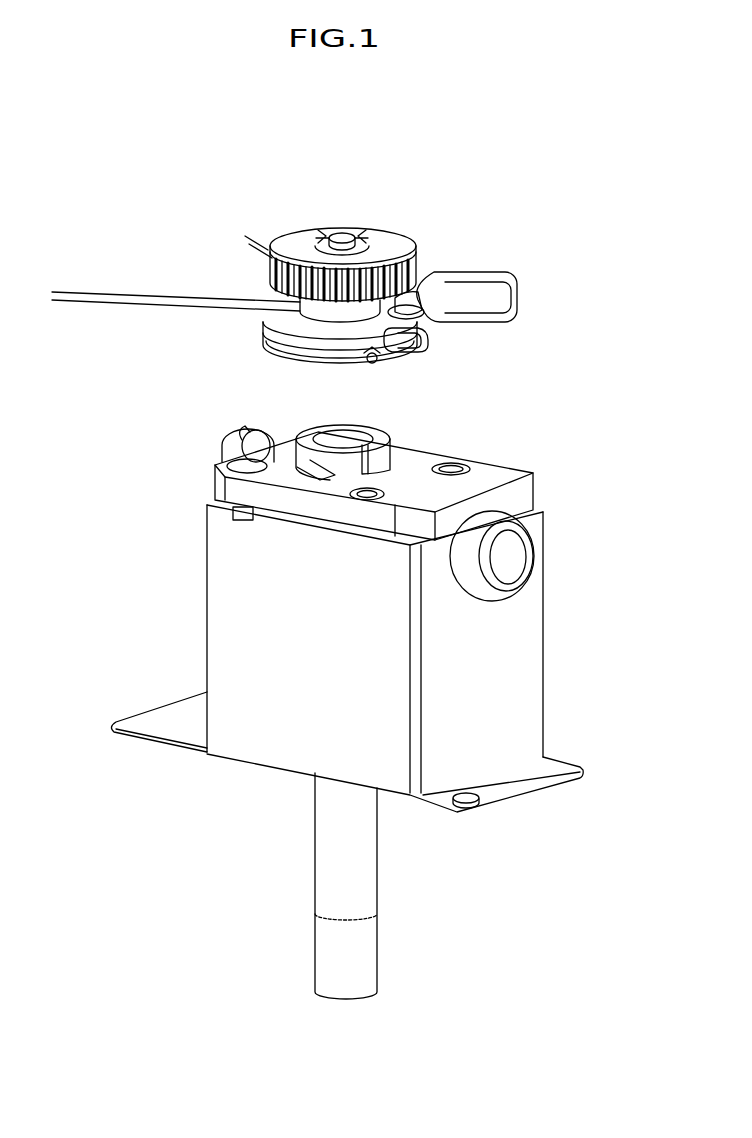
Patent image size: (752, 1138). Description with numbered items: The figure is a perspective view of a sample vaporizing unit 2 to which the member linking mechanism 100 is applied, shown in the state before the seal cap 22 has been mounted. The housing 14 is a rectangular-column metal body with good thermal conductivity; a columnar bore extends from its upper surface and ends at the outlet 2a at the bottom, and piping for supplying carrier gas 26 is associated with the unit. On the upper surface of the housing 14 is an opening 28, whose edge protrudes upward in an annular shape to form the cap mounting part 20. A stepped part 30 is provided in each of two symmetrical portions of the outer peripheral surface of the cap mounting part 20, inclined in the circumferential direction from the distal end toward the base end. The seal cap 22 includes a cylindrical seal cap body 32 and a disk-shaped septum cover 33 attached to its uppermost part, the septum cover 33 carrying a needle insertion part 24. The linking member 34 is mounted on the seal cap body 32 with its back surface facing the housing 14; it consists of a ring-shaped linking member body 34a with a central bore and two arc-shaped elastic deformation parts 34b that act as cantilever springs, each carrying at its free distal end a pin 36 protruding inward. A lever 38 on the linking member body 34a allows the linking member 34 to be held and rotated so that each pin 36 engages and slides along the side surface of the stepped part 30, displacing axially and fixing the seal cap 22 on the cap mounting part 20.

The member linking mechanism 100 is at (156, 226).
The seal cap 22 is at (213, 237).
The needle insertion part 24 is at (341, 228).
The septum cover 33 is at (392, 243).
The piping for supplying carrier gas 26 is at (145, 303).
The lever 38 is at (492, 302).
The linking member 34 is at (181, 322).
The linking member body 34a is at (267, 323).
The elastic deformation part 34b is at (270, 347).
The seal cap body 32 is at (330, 313).
The pin 36 is at (380, 362).
The sample vaporizing unit 2 is at (115, 401).
The opening 28 is at (350, 432).
The stepped part 30 is at (238, 452).
The cap mounting part 20 is at (395, 452).
The housing 14 is at (528, 633).
The outlet of sample vaporizing unit 2a is at (344, 1000).